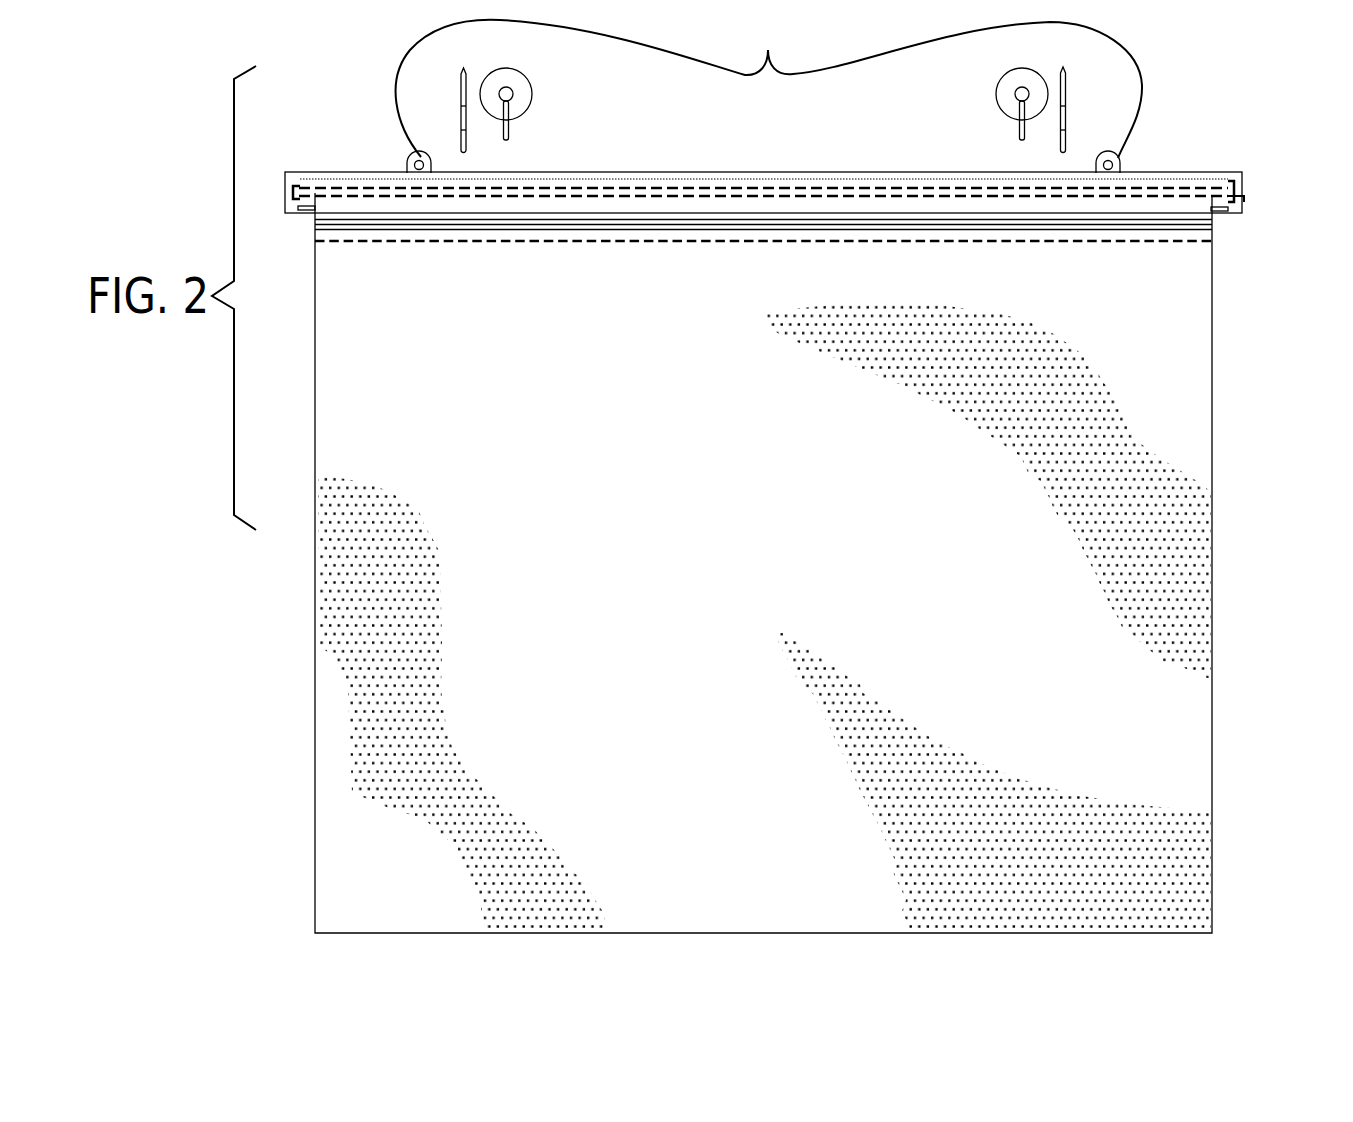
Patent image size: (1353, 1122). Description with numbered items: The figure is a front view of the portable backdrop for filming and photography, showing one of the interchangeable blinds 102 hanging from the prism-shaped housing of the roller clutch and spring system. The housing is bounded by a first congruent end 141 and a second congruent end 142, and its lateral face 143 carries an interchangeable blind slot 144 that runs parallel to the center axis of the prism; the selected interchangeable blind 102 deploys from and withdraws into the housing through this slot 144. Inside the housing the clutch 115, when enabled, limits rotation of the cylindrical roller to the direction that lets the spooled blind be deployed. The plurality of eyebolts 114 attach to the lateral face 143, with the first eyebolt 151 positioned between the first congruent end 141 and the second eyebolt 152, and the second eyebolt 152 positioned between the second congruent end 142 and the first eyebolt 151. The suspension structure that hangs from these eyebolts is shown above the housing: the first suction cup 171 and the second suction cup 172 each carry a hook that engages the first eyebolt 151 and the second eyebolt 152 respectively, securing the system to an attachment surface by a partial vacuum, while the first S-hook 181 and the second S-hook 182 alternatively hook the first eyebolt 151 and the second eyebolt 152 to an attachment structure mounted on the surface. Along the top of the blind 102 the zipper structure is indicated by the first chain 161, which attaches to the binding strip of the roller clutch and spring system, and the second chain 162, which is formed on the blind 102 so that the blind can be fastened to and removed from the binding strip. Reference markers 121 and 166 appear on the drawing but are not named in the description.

The interchangeable blinds 102 is at (1215, 601).
The plurality of eyebolts 114 is at (768, 50).
The clutch 115 is at (1243, 185).
The top hem of panel 121 is at (400, 229).
The first congruent end 141 is at (284, 207).
The second congruent end 142 is at (1244, 199).
The lateral face 143 is at (1232, 180).
The interchangeable blind slot 144 is at (1226, 211).
The first eyebolt 151 is at (412, 162).
The second eyebolt 152 is at (1121, 167).
The first chain 161 is at (799, 216).
The second chain 162 is at (825, 223).
The left end bracket 166 is at (292, 192).
The first suction cup 171 is at (513, 93).
The second suction cup 172 is at (1007, 82).
The first S-hook 181 is at (464, 72).
The second S-hook 182 is at (1113, 98).